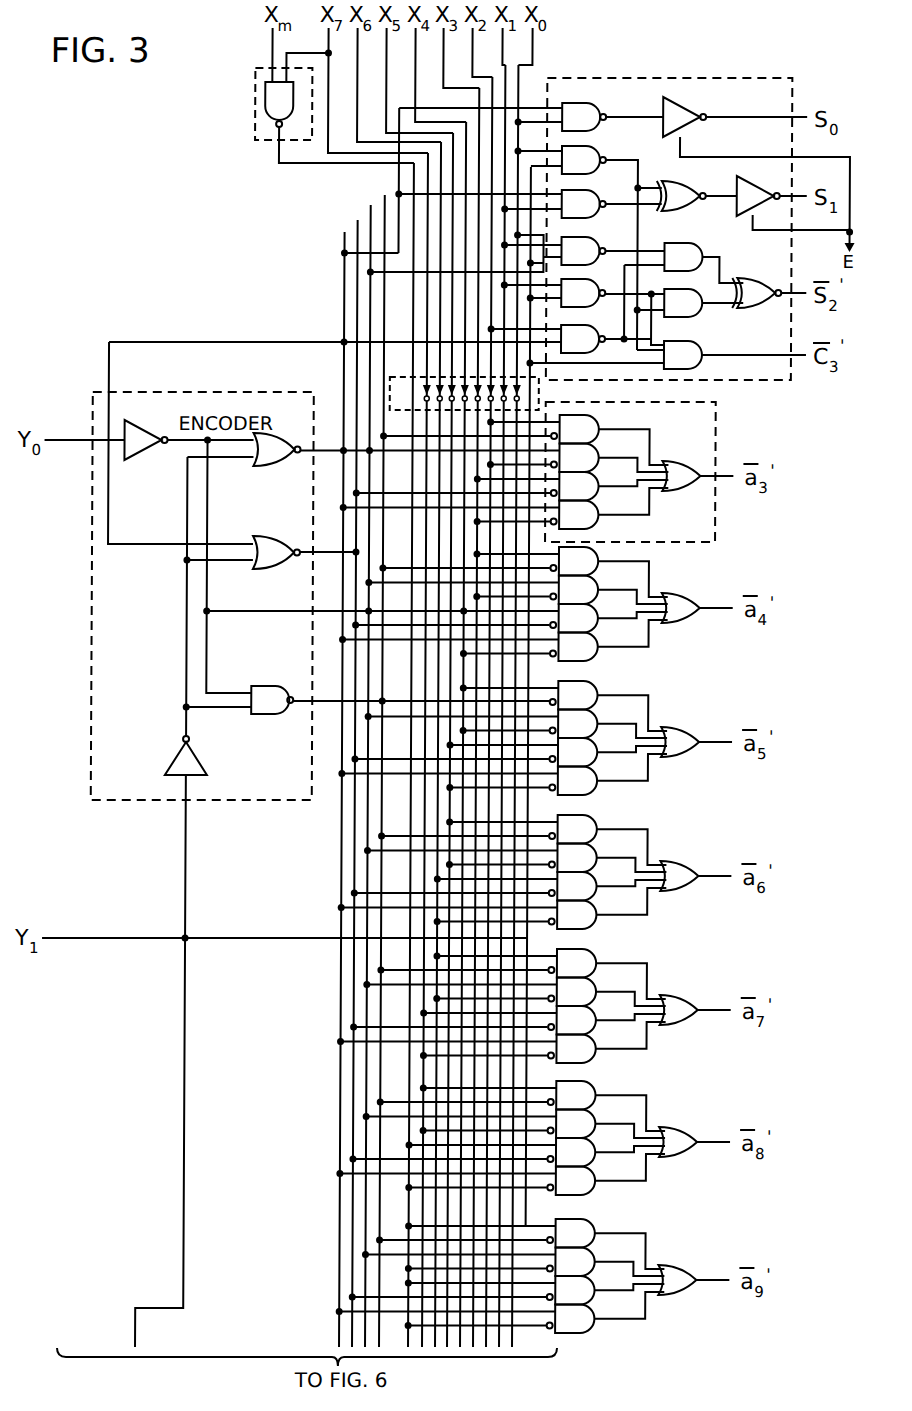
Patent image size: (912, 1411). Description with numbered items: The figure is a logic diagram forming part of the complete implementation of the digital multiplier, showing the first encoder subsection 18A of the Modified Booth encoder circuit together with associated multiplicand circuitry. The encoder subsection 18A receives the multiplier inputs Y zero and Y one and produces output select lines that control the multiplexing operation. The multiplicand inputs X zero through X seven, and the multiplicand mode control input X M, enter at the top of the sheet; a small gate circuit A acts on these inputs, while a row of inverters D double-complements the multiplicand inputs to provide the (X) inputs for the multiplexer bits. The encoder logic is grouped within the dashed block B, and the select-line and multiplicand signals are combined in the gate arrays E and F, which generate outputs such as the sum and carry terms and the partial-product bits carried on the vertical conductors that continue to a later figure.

The encoder subsection 18A is at (92, 795).
The NAND gate block A is at (253, 80).
The encoder block B is at (92, 400).
The inverters D is at (392, 377).
The decoder gate block E is at (716, 410).
The sum and carry logic block F is at (762, 80).